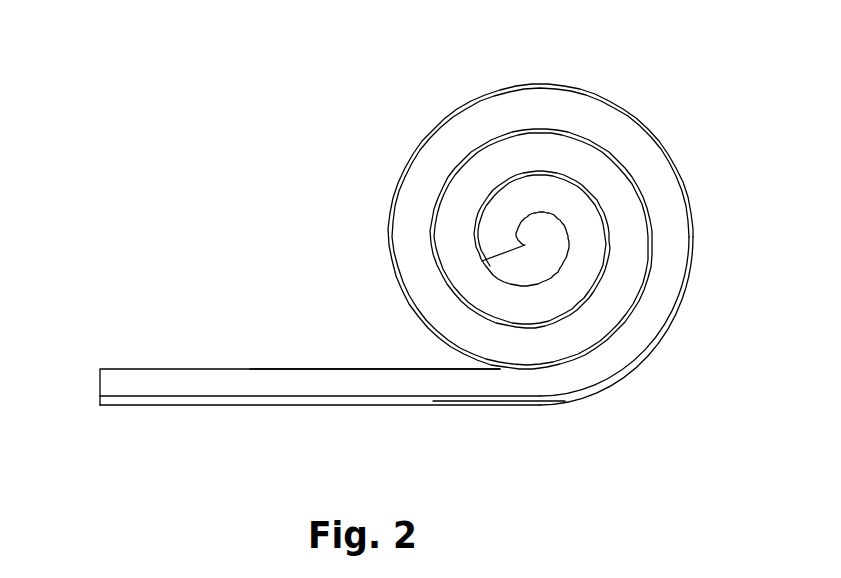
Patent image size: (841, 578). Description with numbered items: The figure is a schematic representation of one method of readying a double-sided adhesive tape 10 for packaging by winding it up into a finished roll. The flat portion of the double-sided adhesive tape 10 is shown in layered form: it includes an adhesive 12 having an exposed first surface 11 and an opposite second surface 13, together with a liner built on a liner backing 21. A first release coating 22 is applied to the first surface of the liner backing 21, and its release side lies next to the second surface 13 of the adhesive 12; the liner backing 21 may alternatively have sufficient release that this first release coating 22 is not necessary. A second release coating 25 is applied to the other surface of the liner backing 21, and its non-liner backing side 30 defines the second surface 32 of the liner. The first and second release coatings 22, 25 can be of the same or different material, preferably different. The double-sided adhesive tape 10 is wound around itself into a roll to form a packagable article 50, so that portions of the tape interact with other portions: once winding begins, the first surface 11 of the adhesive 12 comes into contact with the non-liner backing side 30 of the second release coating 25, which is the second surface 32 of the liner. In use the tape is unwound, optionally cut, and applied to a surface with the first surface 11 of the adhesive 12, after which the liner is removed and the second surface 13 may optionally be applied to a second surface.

The double-sided adhesive tape 10 is at (399, 262).
The first surface of the adhesive 11 is at (285, 365).
The adhesive 12 is at (175, 380).
The second surface of the adhesive 13 is at (433, 398).
The liner backing 21 is at (263, 400).
The first release coating 22 is at (197, 397).
The second release coating 25 is at (305, 407).
The non-liner backing side of the second release coating 30 is at (403, 302).
The second surface of the liner 32 is at (473, 405).
The packagable article 50 is at (626, 90).